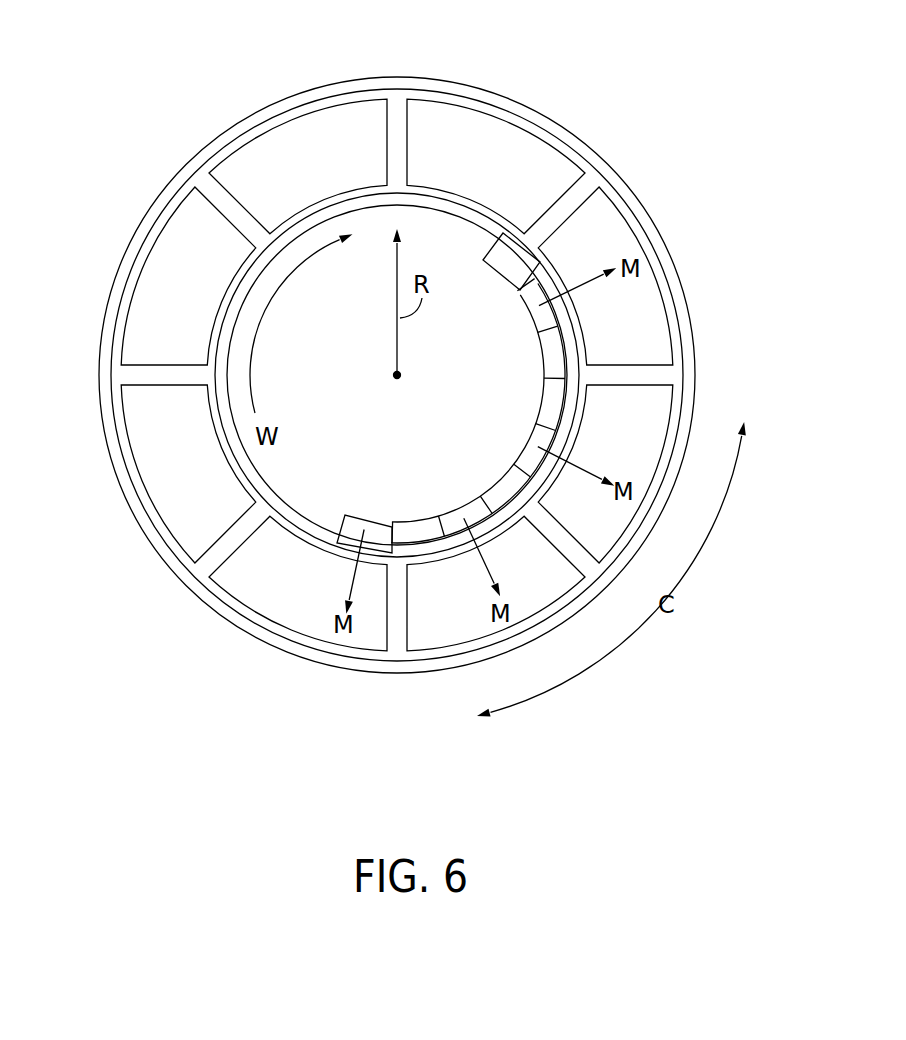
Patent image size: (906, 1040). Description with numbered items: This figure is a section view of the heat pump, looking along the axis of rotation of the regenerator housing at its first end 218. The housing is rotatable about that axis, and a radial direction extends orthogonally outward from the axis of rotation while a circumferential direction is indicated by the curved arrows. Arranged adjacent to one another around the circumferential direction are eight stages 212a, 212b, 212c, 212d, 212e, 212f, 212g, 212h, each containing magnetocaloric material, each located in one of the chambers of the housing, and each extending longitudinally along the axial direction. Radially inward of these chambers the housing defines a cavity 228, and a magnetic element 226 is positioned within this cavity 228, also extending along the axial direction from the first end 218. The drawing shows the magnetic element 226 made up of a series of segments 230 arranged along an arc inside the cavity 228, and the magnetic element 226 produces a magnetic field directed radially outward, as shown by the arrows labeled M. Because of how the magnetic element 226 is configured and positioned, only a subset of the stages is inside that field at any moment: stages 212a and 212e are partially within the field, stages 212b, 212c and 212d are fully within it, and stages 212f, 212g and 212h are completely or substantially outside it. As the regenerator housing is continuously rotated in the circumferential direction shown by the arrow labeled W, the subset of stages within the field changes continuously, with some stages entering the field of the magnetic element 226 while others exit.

The first end 218 is at (649, 124).
The stage 212a is at (467, 142).
The stage 212b is at (637, 305).
The stage 212c is at (642, 413).
The stage 212d is at (447, 622).
The stage 212e is at (270, 587).
The stage 212f is at (155, 437).
The stage 212g is at (180, 245).
The stage 212h is at (315, 138).
The magnetic element 226 is at (382, 537).
The magnet 230 is at (520, 268).
The cavity 228 is at (300, 473).